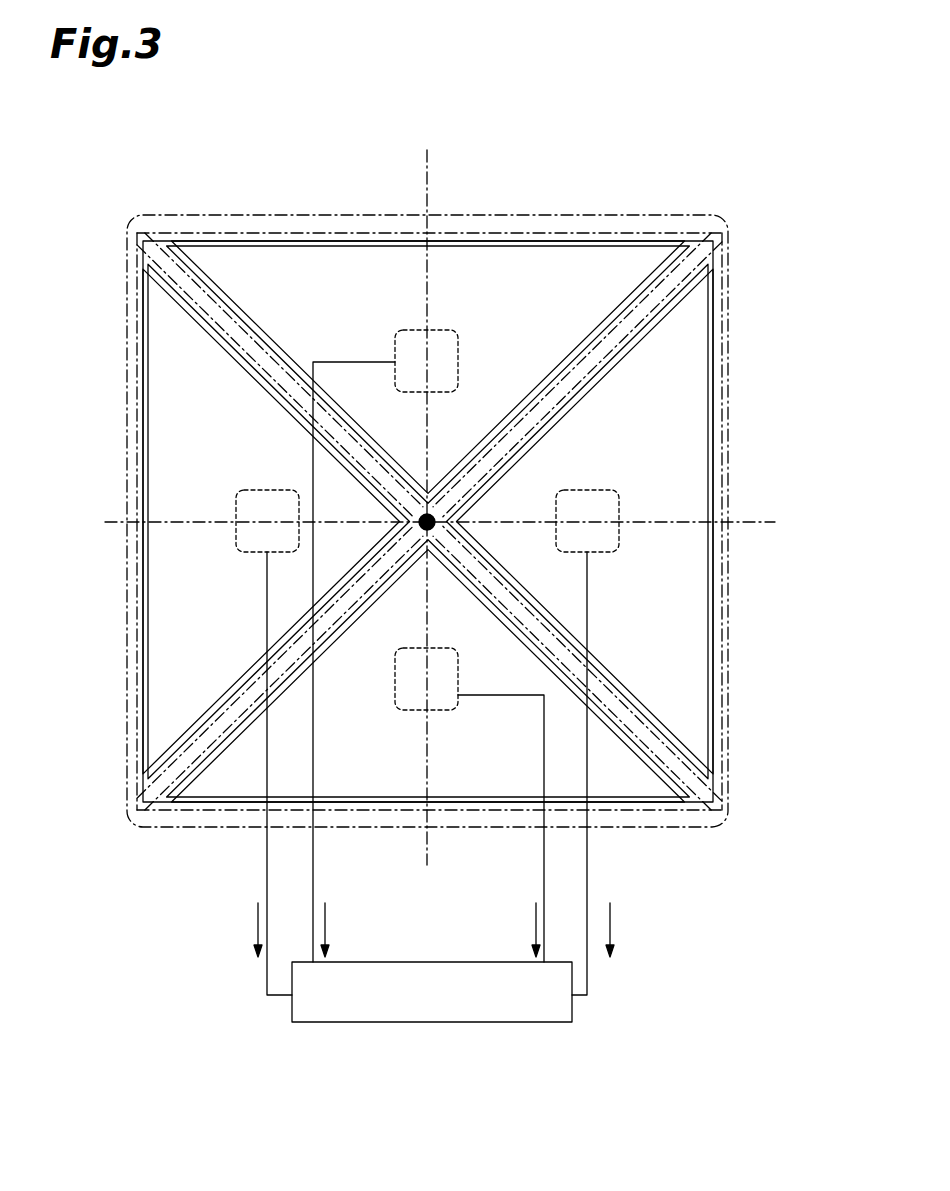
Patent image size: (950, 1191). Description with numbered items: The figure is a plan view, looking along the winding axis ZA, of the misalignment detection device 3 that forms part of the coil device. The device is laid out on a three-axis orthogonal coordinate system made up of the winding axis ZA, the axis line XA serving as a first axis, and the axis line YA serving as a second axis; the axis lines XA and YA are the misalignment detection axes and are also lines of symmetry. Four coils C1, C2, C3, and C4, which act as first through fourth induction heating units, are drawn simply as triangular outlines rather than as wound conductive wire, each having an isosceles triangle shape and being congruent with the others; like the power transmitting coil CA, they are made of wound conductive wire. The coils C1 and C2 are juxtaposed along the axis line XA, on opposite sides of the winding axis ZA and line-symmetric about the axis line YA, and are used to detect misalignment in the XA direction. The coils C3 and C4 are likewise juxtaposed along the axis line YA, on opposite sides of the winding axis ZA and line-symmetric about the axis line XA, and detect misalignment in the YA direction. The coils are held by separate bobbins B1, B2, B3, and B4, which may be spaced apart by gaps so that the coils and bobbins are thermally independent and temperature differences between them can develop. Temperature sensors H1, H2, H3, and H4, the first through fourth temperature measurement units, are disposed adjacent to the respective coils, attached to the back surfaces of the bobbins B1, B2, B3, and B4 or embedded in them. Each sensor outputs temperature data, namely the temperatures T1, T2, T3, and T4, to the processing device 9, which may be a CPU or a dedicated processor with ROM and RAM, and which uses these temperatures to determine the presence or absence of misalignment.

The misalignment detection device 3 is at (708, 157).
The axis line YA is at (412, 160).
The axis line XA is at (760, 520).
The winding axis ZA is at (420, 512).
The power transmitting coil CA is at (125, 272).
The bobbin B1 is at (140, 368).
The bobbin B2 is at (721, 370).
The bobbin B3 is at (215, 820).
The bobbin B4 is at (540, 240).
The coil C1 is at (135, 444).
The coil C2 is at (726, 446).
The coil C3 is at (415, 812).
The coil C4 is at (470, 233).
The temperature sensor H1 is at (232, 540).
The temperature sensor H2 is at (620, 536).
The temperature sensor H3 is at (432, 712).
The temperature sensor H4 is at (412, 325).
The temperature T1 is at (234, 927).
The temperature T2 is at (632, 927).
The temperature T3 is at (509, 927).
The temperature T4 is at (347, 927).
The processing device 9 is at (420, 962).